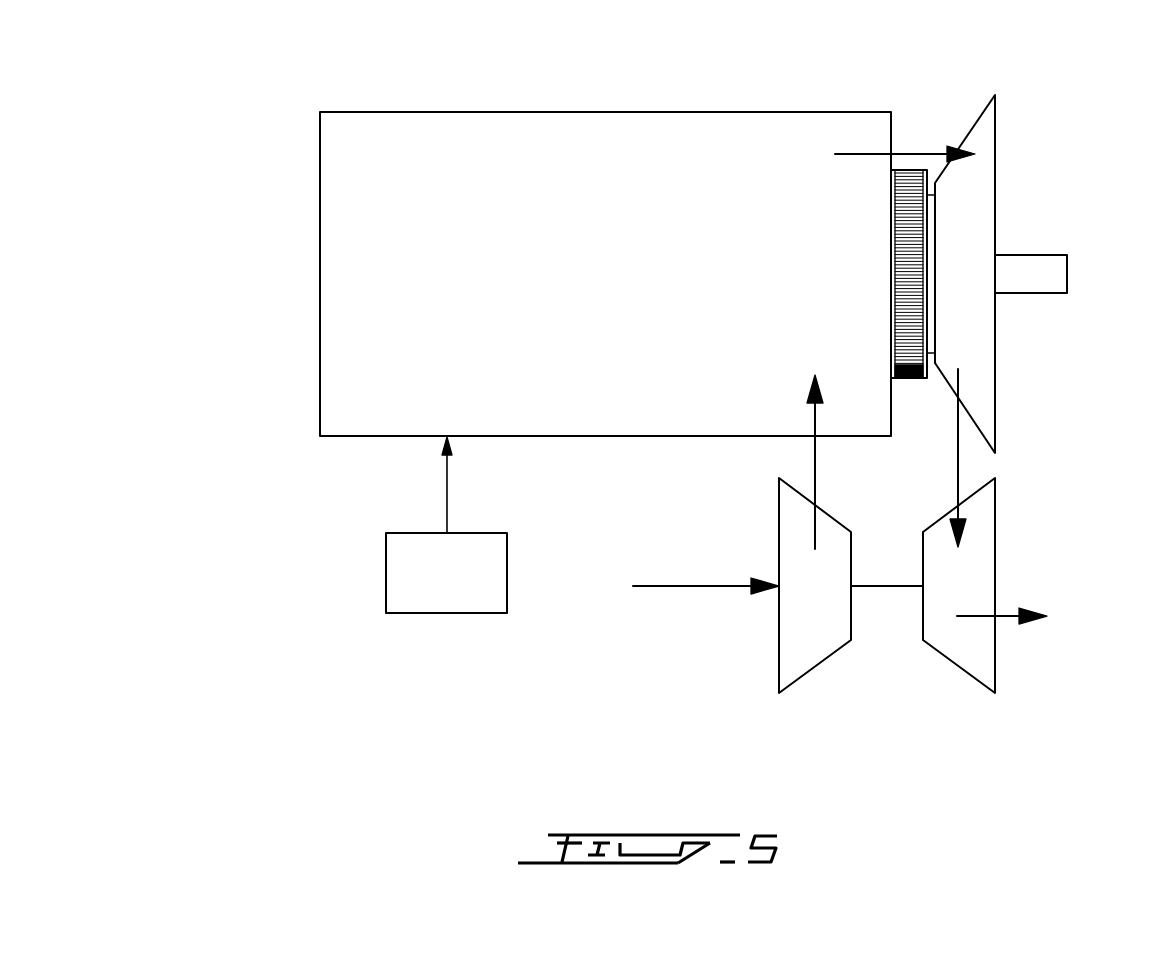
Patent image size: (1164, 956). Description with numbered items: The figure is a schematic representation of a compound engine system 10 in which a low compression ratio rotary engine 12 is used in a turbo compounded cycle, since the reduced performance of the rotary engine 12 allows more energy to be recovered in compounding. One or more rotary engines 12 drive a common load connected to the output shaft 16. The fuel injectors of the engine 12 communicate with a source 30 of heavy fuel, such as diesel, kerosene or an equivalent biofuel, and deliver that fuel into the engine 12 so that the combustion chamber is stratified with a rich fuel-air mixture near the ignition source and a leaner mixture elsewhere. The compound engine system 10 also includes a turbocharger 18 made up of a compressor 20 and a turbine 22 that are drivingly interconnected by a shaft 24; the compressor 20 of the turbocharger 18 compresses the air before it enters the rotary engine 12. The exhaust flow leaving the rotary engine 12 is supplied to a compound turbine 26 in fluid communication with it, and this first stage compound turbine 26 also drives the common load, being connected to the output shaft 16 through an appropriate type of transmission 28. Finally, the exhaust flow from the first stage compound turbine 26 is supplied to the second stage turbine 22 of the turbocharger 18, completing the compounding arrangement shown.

The compound engine system 10 is at (228, 169).
The rotary engine 12 is at (486, 152).
The output shaft 16 is at (1040, 273).
The turbocharger 18 is at (871, 578).
The compressor 20 is at (770, 630).
The turbine 22 is at (975, 588).
The shaft 24 is at (883, 590).
The compound turbine 26 is at (990, 242).
The transmission 28 is at (897, 224).
The source of heavy fuel 30 is at (443, 595).